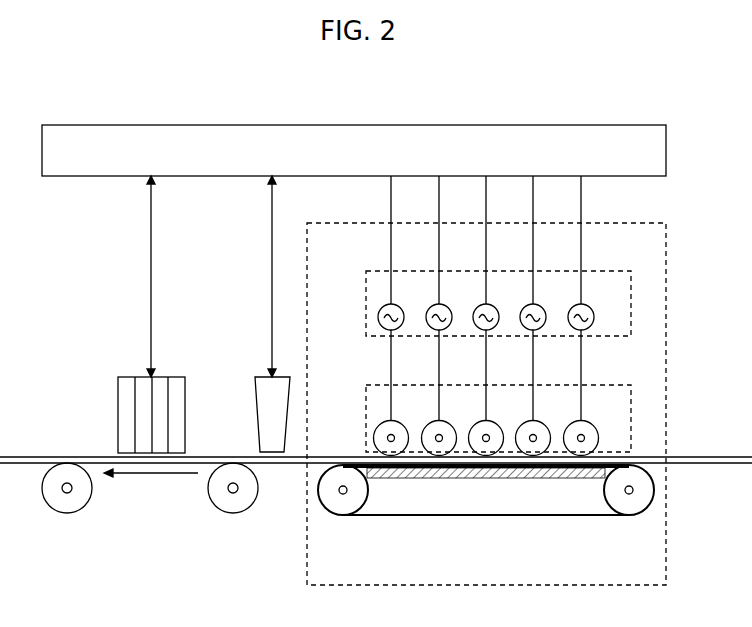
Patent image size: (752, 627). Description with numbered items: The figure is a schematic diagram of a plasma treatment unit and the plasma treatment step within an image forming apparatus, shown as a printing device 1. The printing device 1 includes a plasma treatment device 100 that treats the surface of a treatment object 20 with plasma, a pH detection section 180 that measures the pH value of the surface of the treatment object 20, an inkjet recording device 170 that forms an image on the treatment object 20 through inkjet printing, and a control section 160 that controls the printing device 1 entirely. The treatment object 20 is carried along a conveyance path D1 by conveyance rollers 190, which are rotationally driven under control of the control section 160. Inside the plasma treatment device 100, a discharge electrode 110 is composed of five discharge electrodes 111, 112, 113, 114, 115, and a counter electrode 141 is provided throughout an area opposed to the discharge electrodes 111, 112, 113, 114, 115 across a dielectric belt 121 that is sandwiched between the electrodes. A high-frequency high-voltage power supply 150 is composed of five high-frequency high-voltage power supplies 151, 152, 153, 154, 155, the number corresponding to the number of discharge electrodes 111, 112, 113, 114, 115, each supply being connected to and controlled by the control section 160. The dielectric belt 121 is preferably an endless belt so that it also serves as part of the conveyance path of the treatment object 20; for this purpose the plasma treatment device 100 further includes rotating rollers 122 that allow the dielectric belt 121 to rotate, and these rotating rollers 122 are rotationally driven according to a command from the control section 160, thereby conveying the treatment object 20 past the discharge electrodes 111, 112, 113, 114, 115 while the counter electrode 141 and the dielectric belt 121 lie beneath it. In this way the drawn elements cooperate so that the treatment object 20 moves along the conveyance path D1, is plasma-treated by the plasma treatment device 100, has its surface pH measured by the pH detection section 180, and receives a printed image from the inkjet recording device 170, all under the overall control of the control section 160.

The printing device 1 is at (146, 92).
The treatment object 20 is at (736, 463).
The plasma treatment device 100 is at (618, 222).
The discharge electrode 110 is at (607, 384).
The discharge electrode 111 is at (589, 421).
The discharge electrode 112 is at (541, 421).
The discharge electrode 113 is at (494, 421).
The discharge electrode 114 is at (447, 421).
The discharge electrode 115 is at (399, 421).
The dielectric belt 121 is at (549, 517).
The rotating roller 122 is at (343, 506).
The counter electrode 141 is at (452, 479).
The high-frequency high-voltage power supply 150 is at (605, 269).
The high-frequency high-voltage power supply 151 is at (589, 307).
The high-frequency high-voltage power supply 152 is at (541, 307).
The high-frequency high-voltage power supply 153 is at (494, 307).
The high-frequency high-voltage power supply 154 is at (447, 307).
The high-frequency high-voltage power supply 155 is at (399, 307).
The control section 160 is at (598, 125).
The inkjet recording device 170 is at (118, 421).
The pH detection section 180 is at (257, 392).
The conveyance roller 190 is at (67, 513).
The conveyance path D1 is at (150, 476).